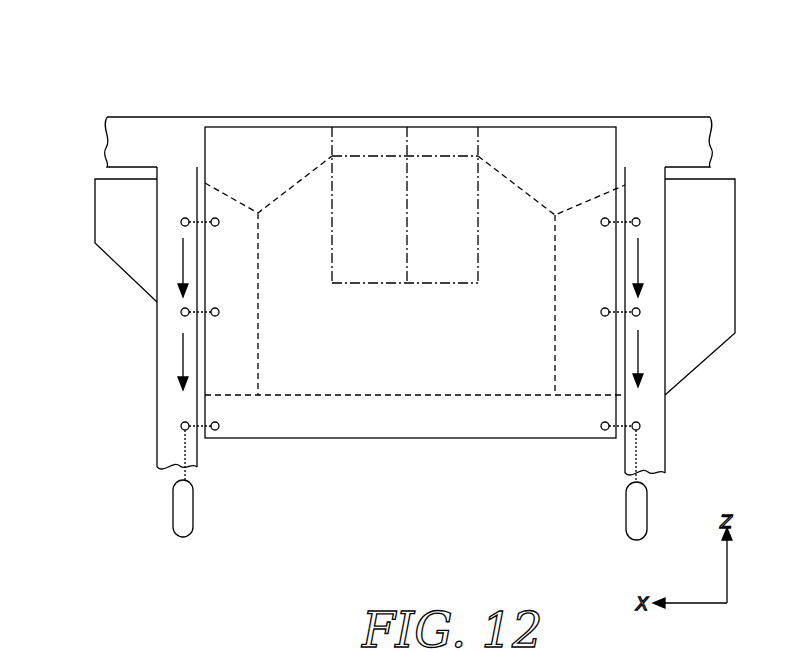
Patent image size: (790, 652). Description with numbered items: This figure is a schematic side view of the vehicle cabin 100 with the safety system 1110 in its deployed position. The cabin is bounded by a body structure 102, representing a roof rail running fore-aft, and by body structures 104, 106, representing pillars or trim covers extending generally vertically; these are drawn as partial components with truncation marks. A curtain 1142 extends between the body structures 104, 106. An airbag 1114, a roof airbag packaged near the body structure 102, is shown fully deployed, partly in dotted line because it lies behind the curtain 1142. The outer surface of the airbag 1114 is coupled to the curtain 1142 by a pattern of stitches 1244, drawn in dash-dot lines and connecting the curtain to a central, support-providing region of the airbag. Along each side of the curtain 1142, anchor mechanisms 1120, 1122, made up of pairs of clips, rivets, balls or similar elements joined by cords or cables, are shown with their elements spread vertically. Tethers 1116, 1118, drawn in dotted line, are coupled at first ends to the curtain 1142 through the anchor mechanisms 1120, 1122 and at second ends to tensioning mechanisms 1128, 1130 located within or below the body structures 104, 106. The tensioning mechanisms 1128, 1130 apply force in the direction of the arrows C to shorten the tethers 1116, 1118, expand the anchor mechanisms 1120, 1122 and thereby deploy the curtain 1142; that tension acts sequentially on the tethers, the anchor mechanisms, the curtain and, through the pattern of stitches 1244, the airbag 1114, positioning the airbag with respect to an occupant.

The vehicle cabin 100 is at (435, 493).
The body structure 102 is at (150, 117).
The body structure 104 is at (157, 420).
The body structure 106 is at (668, 432).
The safety system 1110 is at (296, 503).
The airbag 1114 is at (95, 210).
The tether 1116 is at (185, 440).
The tether 1118 is at (636, 445).
The anchor mechanism 1120 is at (181, 312).
The anchor mechanism 1122 is at (640, 314).
The tensioning mechanism 1128 is at (173, 507).
The tensioning mechanism 1130 is at (626, 508).
The curtain 1142 is at (255, 127).
The pattern of stitches 1244 is at (362, 283).
The arrows C is at (183, 352).